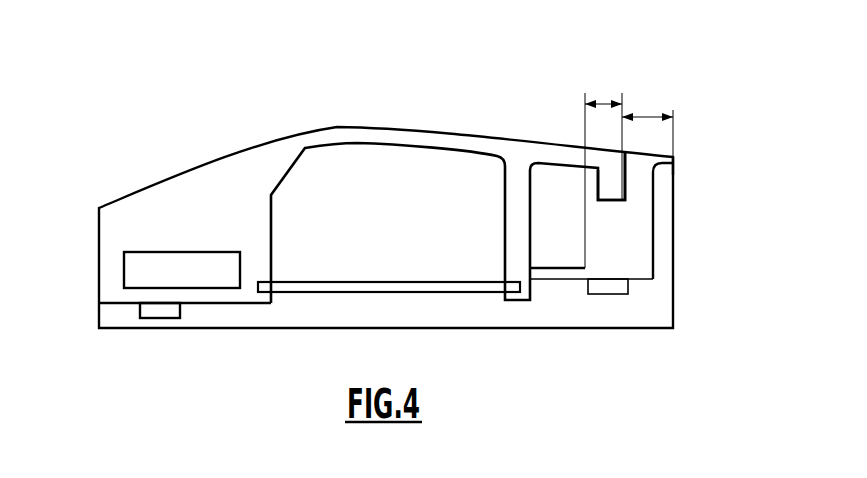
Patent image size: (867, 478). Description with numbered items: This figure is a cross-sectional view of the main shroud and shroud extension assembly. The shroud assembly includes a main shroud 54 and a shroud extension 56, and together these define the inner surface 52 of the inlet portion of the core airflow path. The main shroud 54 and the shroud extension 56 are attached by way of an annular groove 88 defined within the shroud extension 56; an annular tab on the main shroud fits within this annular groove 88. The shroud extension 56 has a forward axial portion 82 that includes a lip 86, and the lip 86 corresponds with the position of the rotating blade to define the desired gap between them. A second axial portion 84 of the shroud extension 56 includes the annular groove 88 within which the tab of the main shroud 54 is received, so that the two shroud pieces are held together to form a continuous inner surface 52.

The inner surface 52 is at (361, 118).
The main shroud 54 is at (425, 130).
The shroud extension 56 is at (638, 228).
The forward axial portion 82 is at (648, 113).
The second axial portion 84 is at (603, 100).
The lip 86 is at (687, 157).
The annular groove 88 is at (609, 210).